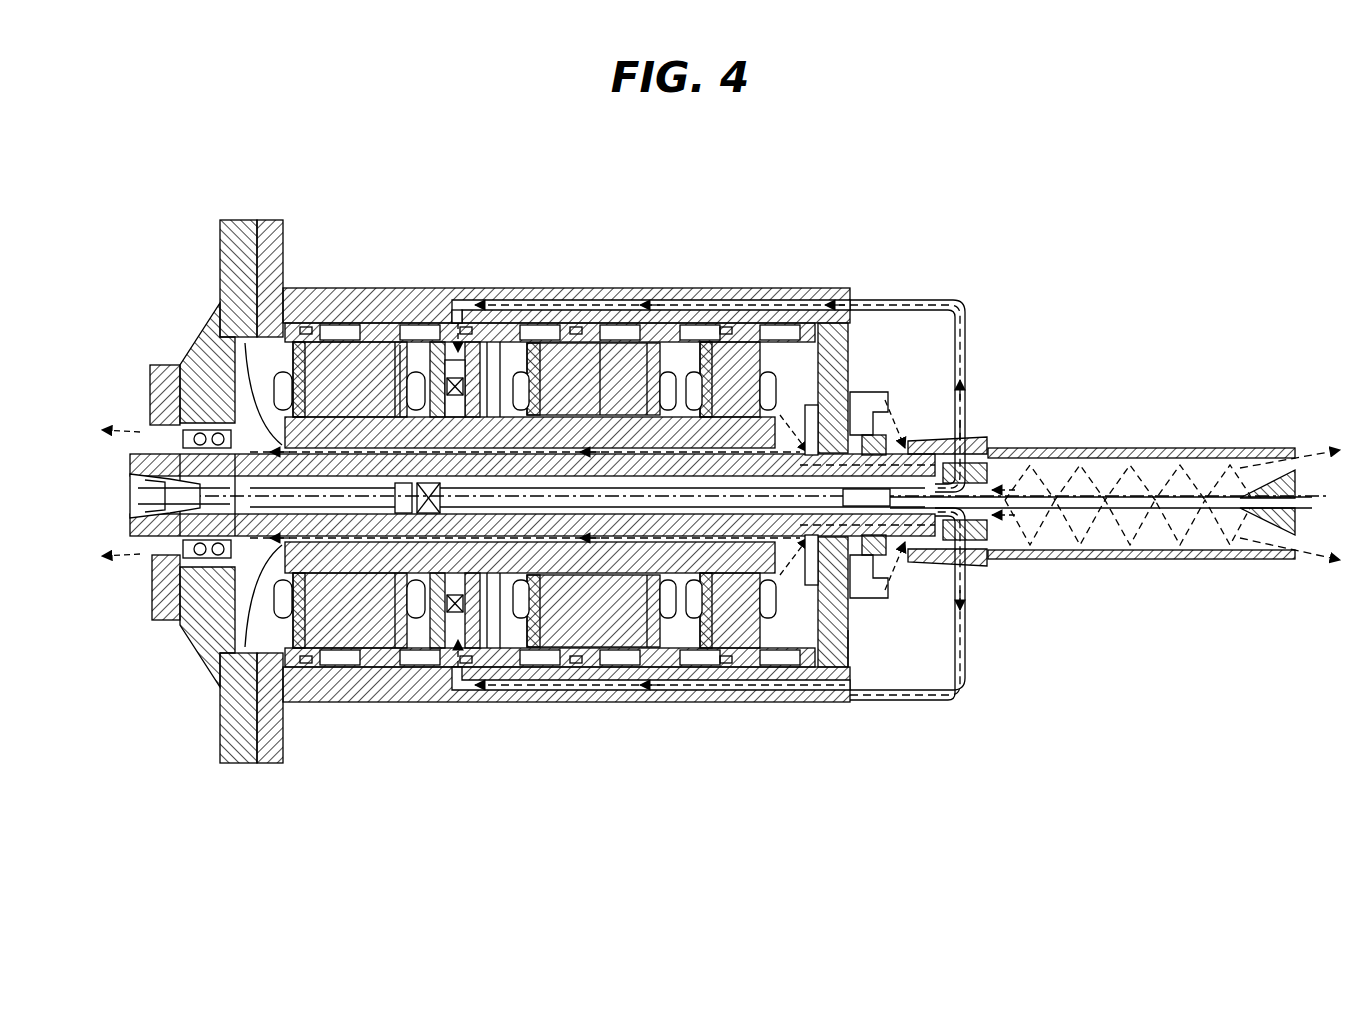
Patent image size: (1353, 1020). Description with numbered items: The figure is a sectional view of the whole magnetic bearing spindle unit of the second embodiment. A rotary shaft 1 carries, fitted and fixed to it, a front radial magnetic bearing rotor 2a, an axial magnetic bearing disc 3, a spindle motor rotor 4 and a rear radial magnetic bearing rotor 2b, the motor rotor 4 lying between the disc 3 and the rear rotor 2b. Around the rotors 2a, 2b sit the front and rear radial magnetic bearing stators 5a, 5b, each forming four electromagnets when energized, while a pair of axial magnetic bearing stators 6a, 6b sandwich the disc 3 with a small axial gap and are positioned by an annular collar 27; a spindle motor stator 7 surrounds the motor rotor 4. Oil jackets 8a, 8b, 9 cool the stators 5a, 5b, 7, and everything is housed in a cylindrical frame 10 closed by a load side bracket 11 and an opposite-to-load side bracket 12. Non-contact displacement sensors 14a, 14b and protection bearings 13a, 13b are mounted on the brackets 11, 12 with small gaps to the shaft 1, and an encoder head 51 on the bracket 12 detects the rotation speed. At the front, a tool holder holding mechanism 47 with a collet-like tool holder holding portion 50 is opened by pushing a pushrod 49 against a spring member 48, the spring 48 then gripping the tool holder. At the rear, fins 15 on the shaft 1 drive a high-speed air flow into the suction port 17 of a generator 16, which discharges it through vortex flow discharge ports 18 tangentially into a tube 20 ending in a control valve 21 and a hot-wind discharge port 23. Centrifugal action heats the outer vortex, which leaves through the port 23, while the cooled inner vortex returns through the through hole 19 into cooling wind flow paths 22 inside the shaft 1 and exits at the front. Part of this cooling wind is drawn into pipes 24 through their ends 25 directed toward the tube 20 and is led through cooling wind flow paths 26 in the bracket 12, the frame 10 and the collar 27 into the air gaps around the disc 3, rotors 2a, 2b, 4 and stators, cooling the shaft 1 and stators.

The rotary shaft 1 is at (128, 471).
The front radial magnetic bearing rotor 2a is at (222, 324).
The rear radial magnetic bearing rotor 2b is at (785, 350).
The axial magnetic bearing disc 3 is at (445, 365).
The spindle motor rotor 4 is at (545, 385).
The front radial magnetic bearing stator 5a is at (340, 348).
The rear radial magnetic bearing stator 5b is at (725, 348).
The load side axial magnetic bearing stator 6a is at (402, 345).
The opposite-to-load side axial magnetic bearing stator 6b is at (480, 360).
The spindle motor stator 7 is at (595, 375).
The oil jacket for front radial magnetic bearing stator 8a is at (360, 690).
The oil jacket for rear radial magnetic bearing stator 8b is at (706, 702).
The oil jacket for spindle motor stator 9 is at (563, 702).
The frame 10 is at (272, 234).
The load side bracket 11 is at (225, 242).
The opposite-to-load side bracket 12 is at (830, 302).
The front protection bearing 13a is at (165, 600).
The rear protection bearing 13b is at (863, 600).
The front non-contact displacement sensor 14a is at (175, 413).
The rear non-contact displacement sensor 14b is at (872, 392).
The fins 15 is at (958, 386).
The generator 16 is at (962, 572).
The high-speed air flow suction port 17 is at (945, 600).
The vortex flow discharge ports 18 is at (985, 488).
The through hole 19 is at (998, 562).
The tube 20 is at (1100, 450).
The control valve 21 is at (1260, 470).
The cooling wind flow paths 22 is at (630, 702).
The hot-wind discharge port 23 is at (1274, 560).
The pipes 24 is at (963, 432).
The one end of pipe 25 is at (995, 501).
The cooling wind flow paths 26 is at (640, 303).
The annular collar 27 is at (458, 345).
The tool holder holding mechanism 47 is at (330, 670).
The spring member 48 is at (812, 630).
The pushrod 49 is at (520, 508).
The tool holder holding portion 50 is at (130, 506).
The encoder head 51 is at (912, 405).